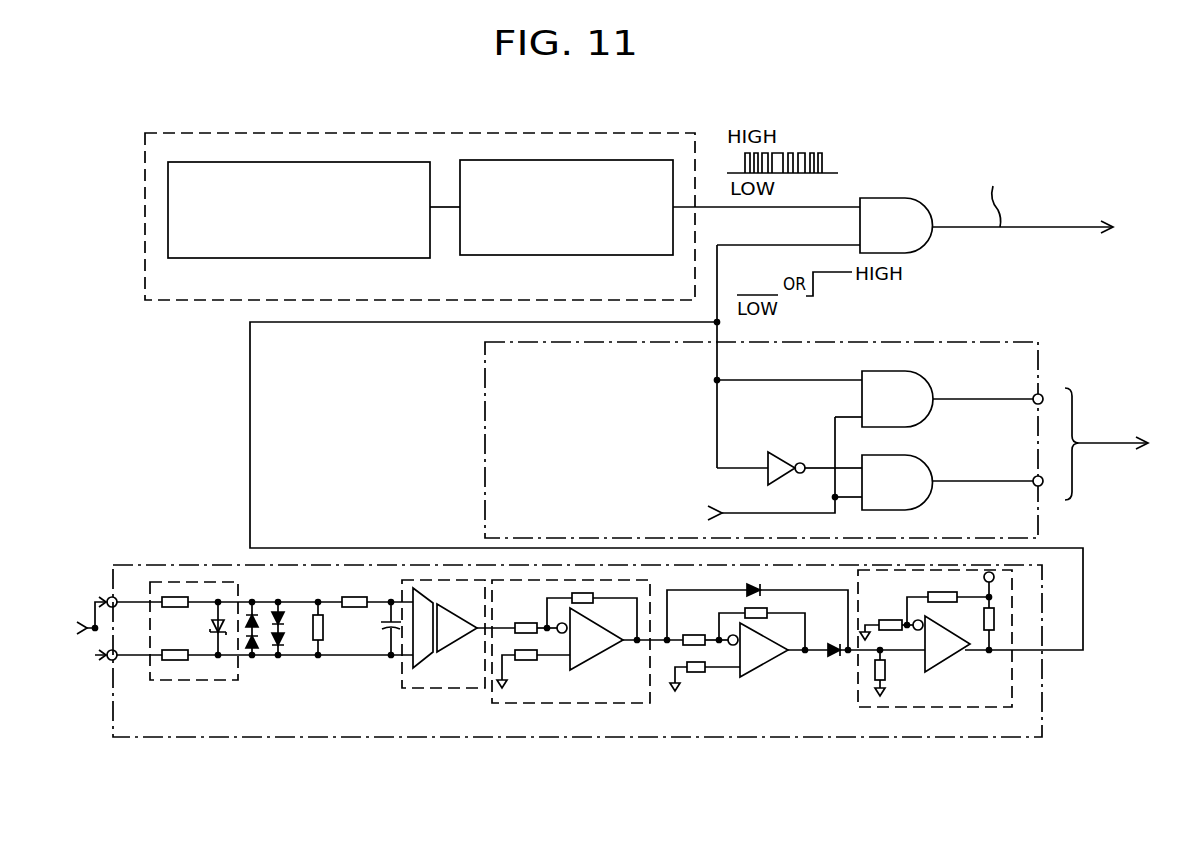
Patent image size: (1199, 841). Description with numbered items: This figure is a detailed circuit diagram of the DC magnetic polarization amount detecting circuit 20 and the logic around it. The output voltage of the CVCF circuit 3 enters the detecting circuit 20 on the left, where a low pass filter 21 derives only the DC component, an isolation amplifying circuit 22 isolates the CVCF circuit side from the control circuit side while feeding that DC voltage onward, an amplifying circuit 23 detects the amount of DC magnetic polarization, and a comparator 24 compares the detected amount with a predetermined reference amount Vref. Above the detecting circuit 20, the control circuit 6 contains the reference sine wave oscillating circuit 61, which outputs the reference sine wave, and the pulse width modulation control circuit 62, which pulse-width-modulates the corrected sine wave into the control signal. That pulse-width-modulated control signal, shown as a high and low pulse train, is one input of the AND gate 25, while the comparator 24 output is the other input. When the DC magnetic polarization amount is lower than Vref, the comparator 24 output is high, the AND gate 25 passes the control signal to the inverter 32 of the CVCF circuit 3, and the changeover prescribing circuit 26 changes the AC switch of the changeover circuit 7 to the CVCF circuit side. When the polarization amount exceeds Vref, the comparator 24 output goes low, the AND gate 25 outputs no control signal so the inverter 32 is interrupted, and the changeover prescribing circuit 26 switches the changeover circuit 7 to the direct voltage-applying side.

The control circuit 6 is at (208, 134).
The reference sine wave oscillating circuit 61 is at (348, 162).
The pulse width modulation control circuit 62 is at (608, 160).
The AND gate 25 is at (892, 198).
The inverter 32 is at (1041, 191).
The changeover prescribing circuit 26 is at (485, 405).
The changeover circuit 7 is at (1129, 404).
The DC magnetic polarization amount detecting circuit 20 is at (405, 737).
The CVCF circuit 3 is at (87, 628).
The low pass filter 21 is at (240, 672).
The isolation amplifying circuit 22 is at (400, 682).
The amplifying circuit 23 is at (655, 692).
The comparator 24 is at (858, 690).